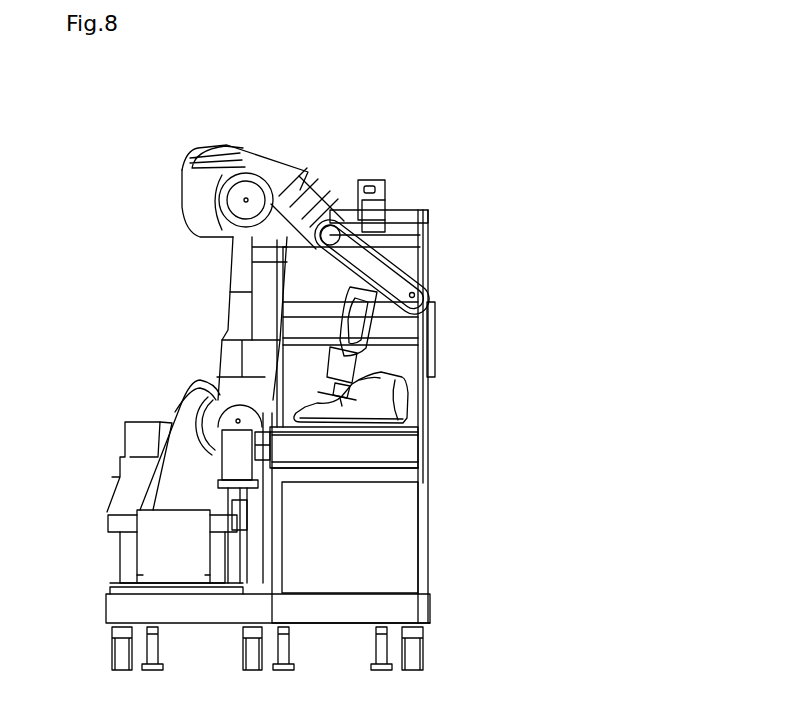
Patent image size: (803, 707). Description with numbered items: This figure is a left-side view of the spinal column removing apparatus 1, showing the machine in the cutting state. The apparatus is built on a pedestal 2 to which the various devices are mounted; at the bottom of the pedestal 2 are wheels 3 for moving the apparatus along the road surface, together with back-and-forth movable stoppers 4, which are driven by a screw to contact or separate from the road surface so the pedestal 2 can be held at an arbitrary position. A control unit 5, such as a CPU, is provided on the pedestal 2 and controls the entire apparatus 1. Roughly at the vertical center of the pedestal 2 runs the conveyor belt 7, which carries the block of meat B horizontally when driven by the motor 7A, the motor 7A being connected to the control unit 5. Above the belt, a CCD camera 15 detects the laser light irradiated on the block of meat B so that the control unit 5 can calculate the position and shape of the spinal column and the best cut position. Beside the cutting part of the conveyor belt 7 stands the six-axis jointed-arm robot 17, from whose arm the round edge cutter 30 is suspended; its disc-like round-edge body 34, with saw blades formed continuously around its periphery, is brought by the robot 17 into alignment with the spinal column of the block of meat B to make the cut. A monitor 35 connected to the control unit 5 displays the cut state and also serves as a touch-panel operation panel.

The spinal column removing apparatus 1 is at (480, 224).
The pedestal 2 is at (125, 608).
The wheel 3 is at (116, 658).
The back-and-forth movable stopper 4 is at (288, 648).
The control unit 5 is at (160, 552).
The conveyor belt 7 is at (432, 452).
The motor 7A is at (237, 455).
The CCD camera 15 is at (387, 207).
The six-axis jointed-arm robot 17 is at (232, 325).
The round edge cutter 30 is at (330, 340).
The round-edge body 34 is at (330, 424).
The monitor 35 is at (435, 332).
The block of meat B is at (405, 397).